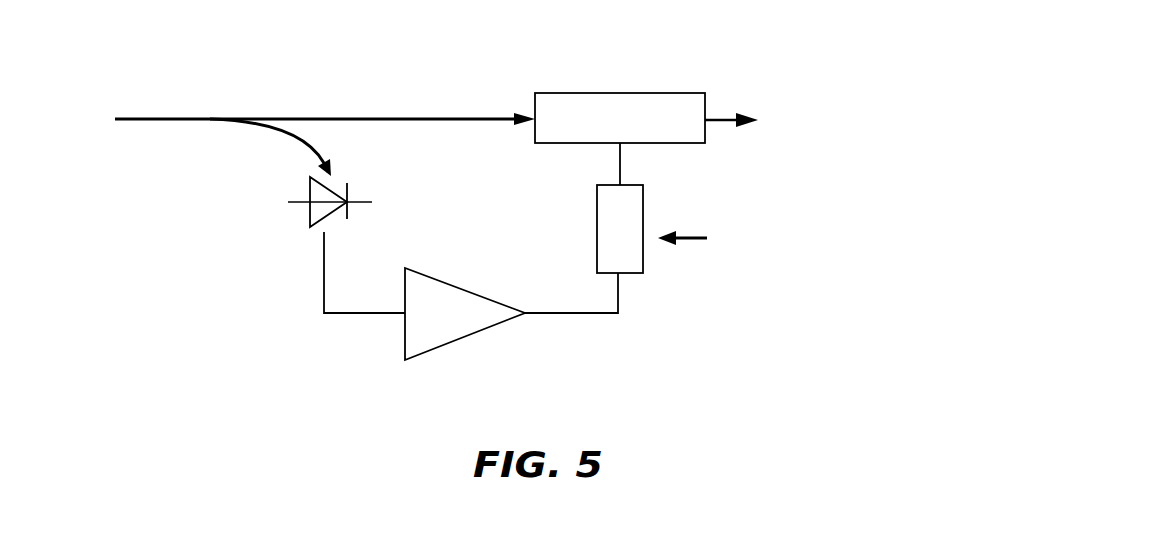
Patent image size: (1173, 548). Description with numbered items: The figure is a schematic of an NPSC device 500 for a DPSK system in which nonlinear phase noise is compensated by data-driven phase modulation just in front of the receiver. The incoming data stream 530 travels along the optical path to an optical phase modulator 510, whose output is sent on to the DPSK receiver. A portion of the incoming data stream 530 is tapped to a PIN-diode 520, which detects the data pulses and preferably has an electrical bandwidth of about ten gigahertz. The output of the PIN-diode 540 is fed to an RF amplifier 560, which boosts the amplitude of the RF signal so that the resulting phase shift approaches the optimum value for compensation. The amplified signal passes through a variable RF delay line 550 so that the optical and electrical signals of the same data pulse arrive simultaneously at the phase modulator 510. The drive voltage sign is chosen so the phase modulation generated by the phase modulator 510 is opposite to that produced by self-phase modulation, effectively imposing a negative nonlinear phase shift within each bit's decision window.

The NPSC device 500 is at (443, 41).
The optical phase modulator 510 is at (667, 143).
The PIN-diode 520 is at (333, 185).
The incoming data stream 530 is at (250, 101).
The output of the PIN-diode 540 is at (324, 269).
The variable RF delay line 550 is at (643, 265).
The RF amplifier 560 is at (470, 289).